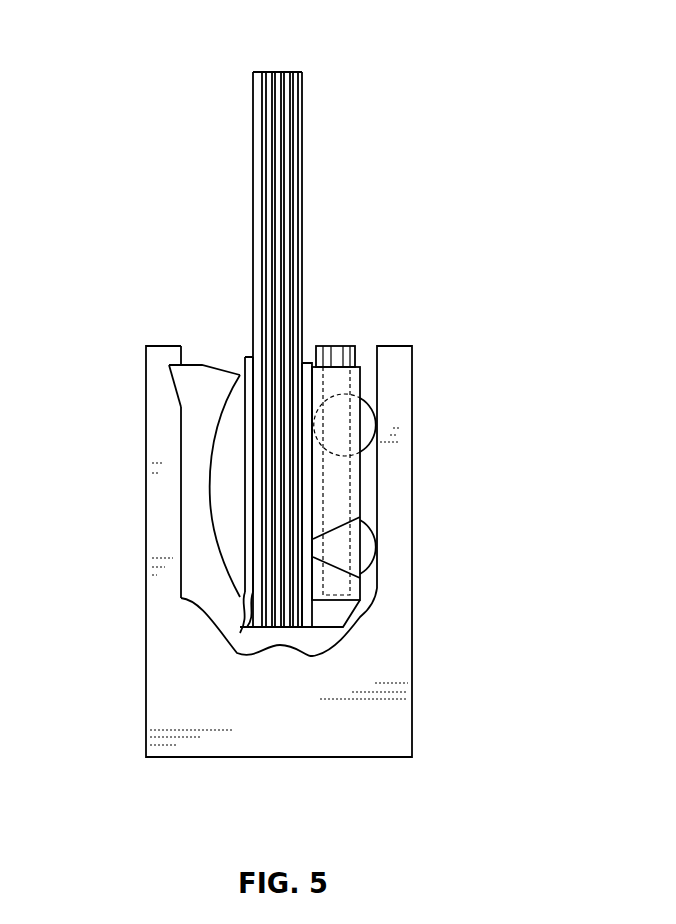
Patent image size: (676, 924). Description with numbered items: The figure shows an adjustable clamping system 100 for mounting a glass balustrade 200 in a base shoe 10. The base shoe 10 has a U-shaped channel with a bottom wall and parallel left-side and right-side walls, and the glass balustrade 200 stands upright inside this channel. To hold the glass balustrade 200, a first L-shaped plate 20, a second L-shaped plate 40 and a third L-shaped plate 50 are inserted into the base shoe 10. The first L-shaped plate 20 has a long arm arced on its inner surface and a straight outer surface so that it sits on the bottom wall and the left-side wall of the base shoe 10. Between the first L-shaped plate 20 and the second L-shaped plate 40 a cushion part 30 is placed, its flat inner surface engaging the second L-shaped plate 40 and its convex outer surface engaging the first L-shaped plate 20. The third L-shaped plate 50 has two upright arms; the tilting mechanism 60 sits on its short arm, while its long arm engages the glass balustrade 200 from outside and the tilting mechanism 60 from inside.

The adjustable clamping system 100 is at (410, 152).
The base shoe 10 is at (203, 721).
The first L-shaped plate 20 is at (210, 598).
The cushion part 30 is at (228, 477).
The second L-shaped plate 40 is at (300, 633).
The third L-shaped plate 50 is at (328, 608).
The tilting mechanism 60 is at (340, 382).
The glass balustrade 200 is at (267, 92).